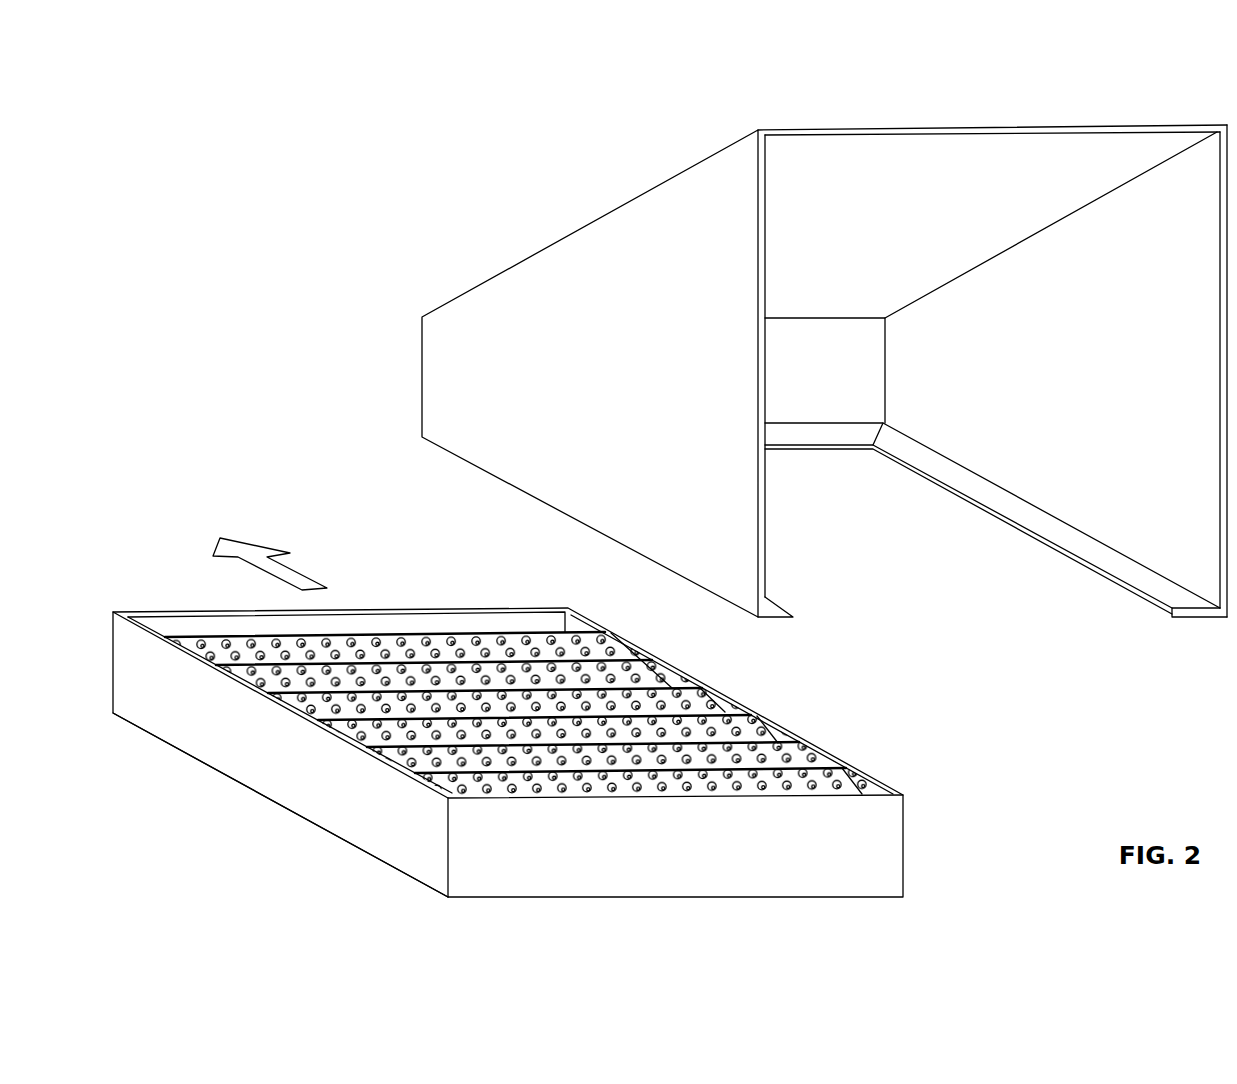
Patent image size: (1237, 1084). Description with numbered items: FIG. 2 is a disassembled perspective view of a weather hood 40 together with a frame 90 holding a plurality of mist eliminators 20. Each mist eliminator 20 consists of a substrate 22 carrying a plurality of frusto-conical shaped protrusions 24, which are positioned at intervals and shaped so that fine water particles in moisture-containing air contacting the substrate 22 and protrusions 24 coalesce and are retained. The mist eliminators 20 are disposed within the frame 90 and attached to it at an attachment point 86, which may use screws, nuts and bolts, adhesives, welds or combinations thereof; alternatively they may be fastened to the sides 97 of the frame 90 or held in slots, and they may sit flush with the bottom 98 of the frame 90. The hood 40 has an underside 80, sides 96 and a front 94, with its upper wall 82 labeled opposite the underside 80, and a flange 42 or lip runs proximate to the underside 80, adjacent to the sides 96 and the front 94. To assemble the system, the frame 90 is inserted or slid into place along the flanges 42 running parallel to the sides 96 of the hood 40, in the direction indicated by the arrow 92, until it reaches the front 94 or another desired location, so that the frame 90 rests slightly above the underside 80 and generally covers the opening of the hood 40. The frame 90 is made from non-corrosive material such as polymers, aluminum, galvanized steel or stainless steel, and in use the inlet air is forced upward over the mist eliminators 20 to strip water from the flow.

The mist eliminator 20 is at (749, 705).
The substrate 22 is at (528, 680).
The frusto-conical shaped protrusions 24 is at (431, 637).
The hood 40 is at (824, 349).
The flange 42 is at (782, 437).
The underside 80 is at (824, 349).
The top wall 82 is at (905, 143).
The attachment point 86 is at (655, 665).
The frame 90 is at (534, 739).
The arrow 92 is at (297, 572).
The front 94 is at (815, 398).
The sides 96 is at (541, 463).
The sides 97 is at (285, 800).
The bottom 98 is at (372, 858).